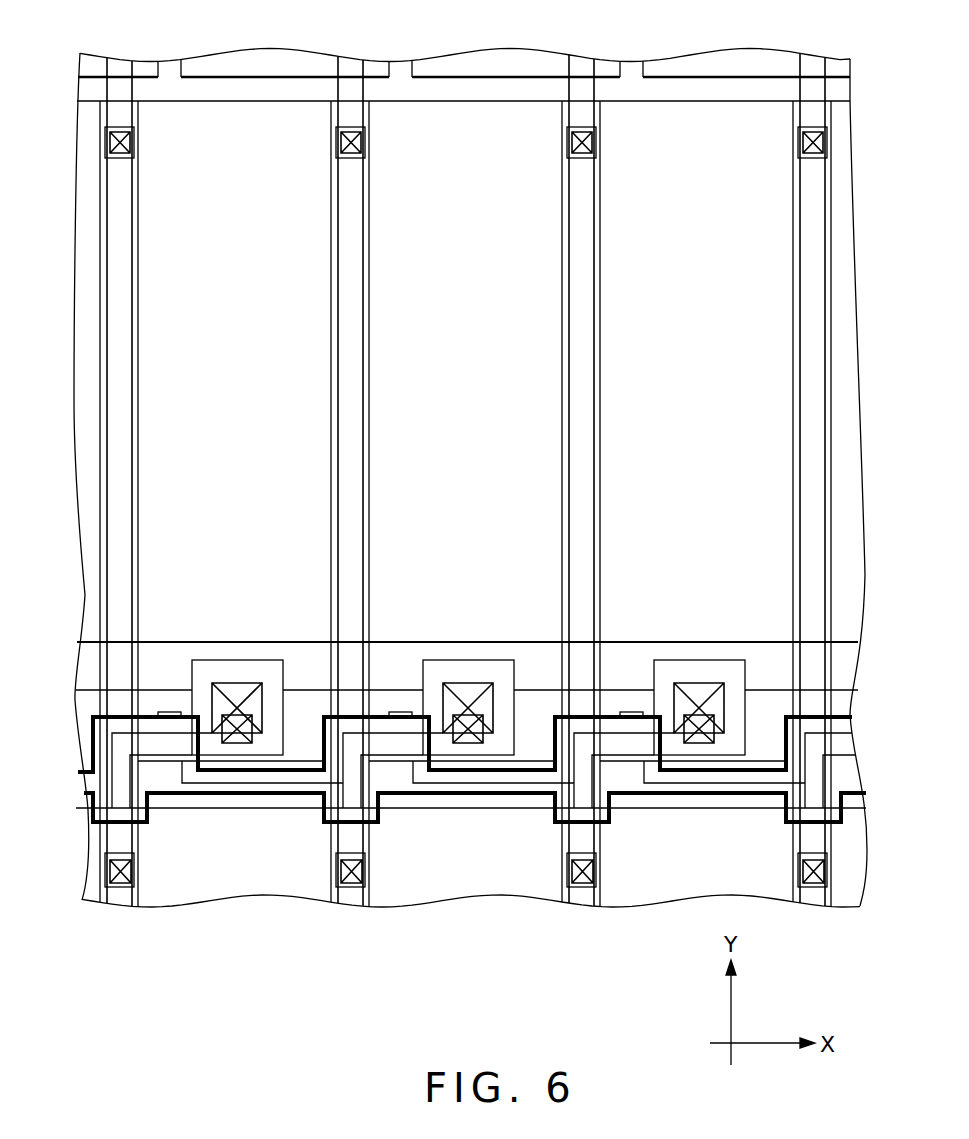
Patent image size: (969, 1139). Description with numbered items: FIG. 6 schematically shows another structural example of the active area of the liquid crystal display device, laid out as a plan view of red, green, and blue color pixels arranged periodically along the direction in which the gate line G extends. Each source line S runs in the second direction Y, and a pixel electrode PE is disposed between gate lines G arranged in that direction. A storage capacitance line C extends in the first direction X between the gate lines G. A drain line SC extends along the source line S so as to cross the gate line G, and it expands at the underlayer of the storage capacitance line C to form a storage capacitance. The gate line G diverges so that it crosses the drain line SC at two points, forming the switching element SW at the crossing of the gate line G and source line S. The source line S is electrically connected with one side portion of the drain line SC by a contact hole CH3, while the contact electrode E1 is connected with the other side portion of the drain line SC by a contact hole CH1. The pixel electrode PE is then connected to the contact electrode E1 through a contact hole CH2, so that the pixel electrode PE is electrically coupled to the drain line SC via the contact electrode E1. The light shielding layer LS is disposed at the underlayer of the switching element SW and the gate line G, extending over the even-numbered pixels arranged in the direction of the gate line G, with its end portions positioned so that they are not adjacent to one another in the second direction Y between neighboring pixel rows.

The source line S is at (121, 85).
The pixel electrode PE is at (193, 117).
The gate line G is at (232, 101).
The storage capacitance line C is at (85, 652).
The contact electrode E1 is at (208, 660).
The contact hole CH1 is at (247, 686).
The contact hole CH2 is at (246, 716).
The drain line SC is at (265, 742).
The light shielding layer LS is at (847, 713).
The switching element SW is at (164, 831).
The contact hole CH3 is at (110, 870).